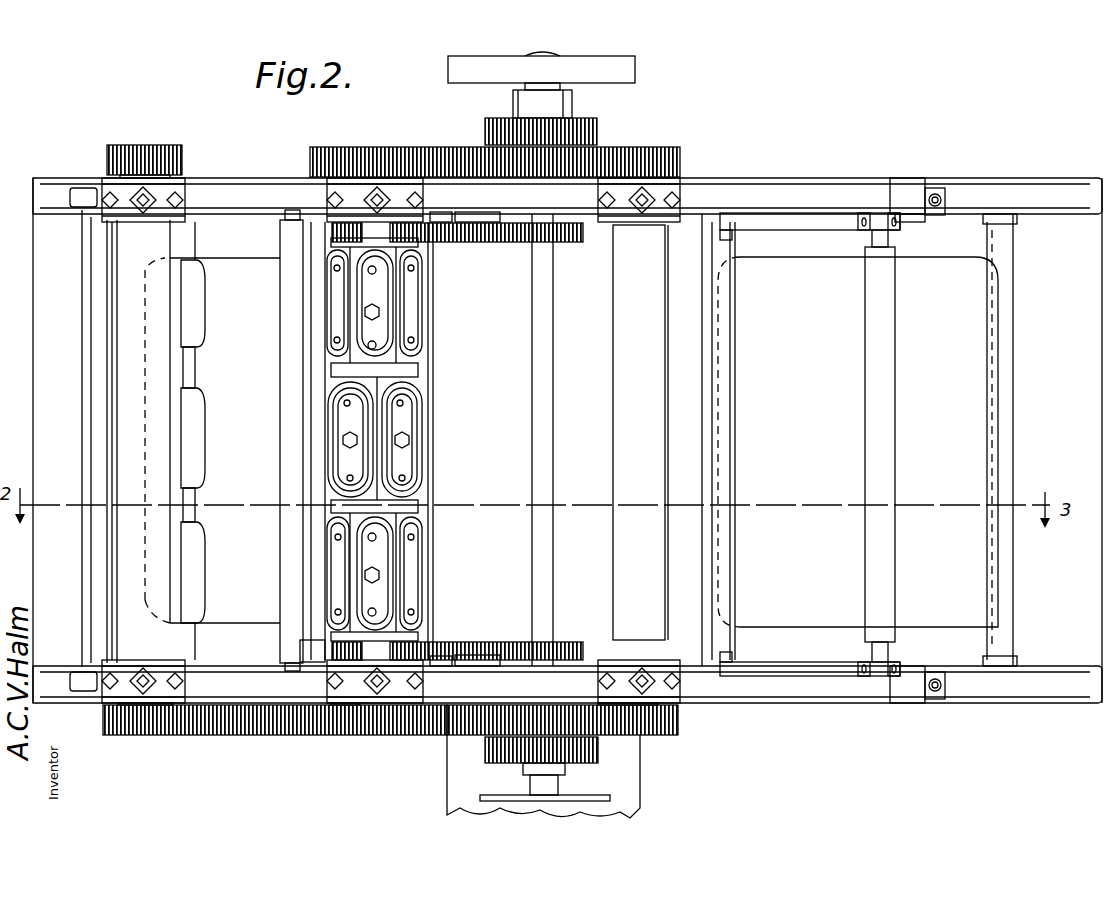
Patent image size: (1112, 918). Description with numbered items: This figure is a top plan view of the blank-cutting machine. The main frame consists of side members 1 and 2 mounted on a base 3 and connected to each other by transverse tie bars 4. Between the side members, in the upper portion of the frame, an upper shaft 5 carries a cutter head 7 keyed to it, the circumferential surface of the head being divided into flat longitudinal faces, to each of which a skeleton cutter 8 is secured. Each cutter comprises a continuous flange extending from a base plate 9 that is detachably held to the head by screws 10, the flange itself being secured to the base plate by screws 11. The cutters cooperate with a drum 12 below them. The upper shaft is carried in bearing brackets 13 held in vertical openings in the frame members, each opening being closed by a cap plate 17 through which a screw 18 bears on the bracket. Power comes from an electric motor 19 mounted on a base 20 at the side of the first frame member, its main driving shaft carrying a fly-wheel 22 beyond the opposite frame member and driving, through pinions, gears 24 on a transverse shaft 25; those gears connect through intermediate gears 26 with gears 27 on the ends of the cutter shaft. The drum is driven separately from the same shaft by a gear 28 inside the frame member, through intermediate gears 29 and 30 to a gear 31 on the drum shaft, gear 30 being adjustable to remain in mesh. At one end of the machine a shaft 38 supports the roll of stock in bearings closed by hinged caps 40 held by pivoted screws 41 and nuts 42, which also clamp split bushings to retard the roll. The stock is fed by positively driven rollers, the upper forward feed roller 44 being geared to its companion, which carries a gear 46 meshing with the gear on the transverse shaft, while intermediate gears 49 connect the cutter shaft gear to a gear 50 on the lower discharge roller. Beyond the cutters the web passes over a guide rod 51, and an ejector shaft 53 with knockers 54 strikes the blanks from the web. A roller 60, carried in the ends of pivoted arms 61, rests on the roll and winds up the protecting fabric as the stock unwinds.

The side member 1 is at (785, 688).
The side member 2 is at (747, 198).
The base 3 is at (1043, 240).
The transverse tie bar 4 is at (97, 340).
The upper shaft 5 is at (374, 230).
The cutter head 7 is at (393, 520).
The cutter 8 is at (342, 332).
The base plate 9 is at (405, 413).
The screw 10 is at (333, 337).
The screw 11 is at (395, 498).
The drum 12 is at (425, 262).
The bearing bracket 13 is at (333, 727).
The cap plate 17 is at (355, 194).
The screw 18 is at (376, 198).
The electric motor 19 is at (608, 812).
The base 20 is at (600, 778).
The fly-wheel 22 is at (622, 72).
The gear 24 is at (556, 166).
The shaft 25 is at (540, 493).
The intermediate gear 26 is at (470, 150).
The gear 27 is at (343, 146).
The gear 28 is at (566, 243).
The intermediate gear 29 is at (481, 241).
The intermediate gear 30 is at (441, 240).
The gear 31 is at (300, 650).
The shaft 38 is at (908, 240).
The hinged cap 40 is at (896, 192).
The screw 41 is at (937, 193).
The nut 42 is at (928, 190).
The upper feed roller 44 is at (634, 297).
The gear 46 is at (657, 718).
The intermediate gear 49 is at (213, 733).
The gear 50 is at (142, 723).
The guide rod 51 is at (287, 400).
The shaft 53 is at (190, 242).
The knocker 54 is at (205, 300).
The roller 60 is at (875, 418).
The arm 61 is at (795, 222).